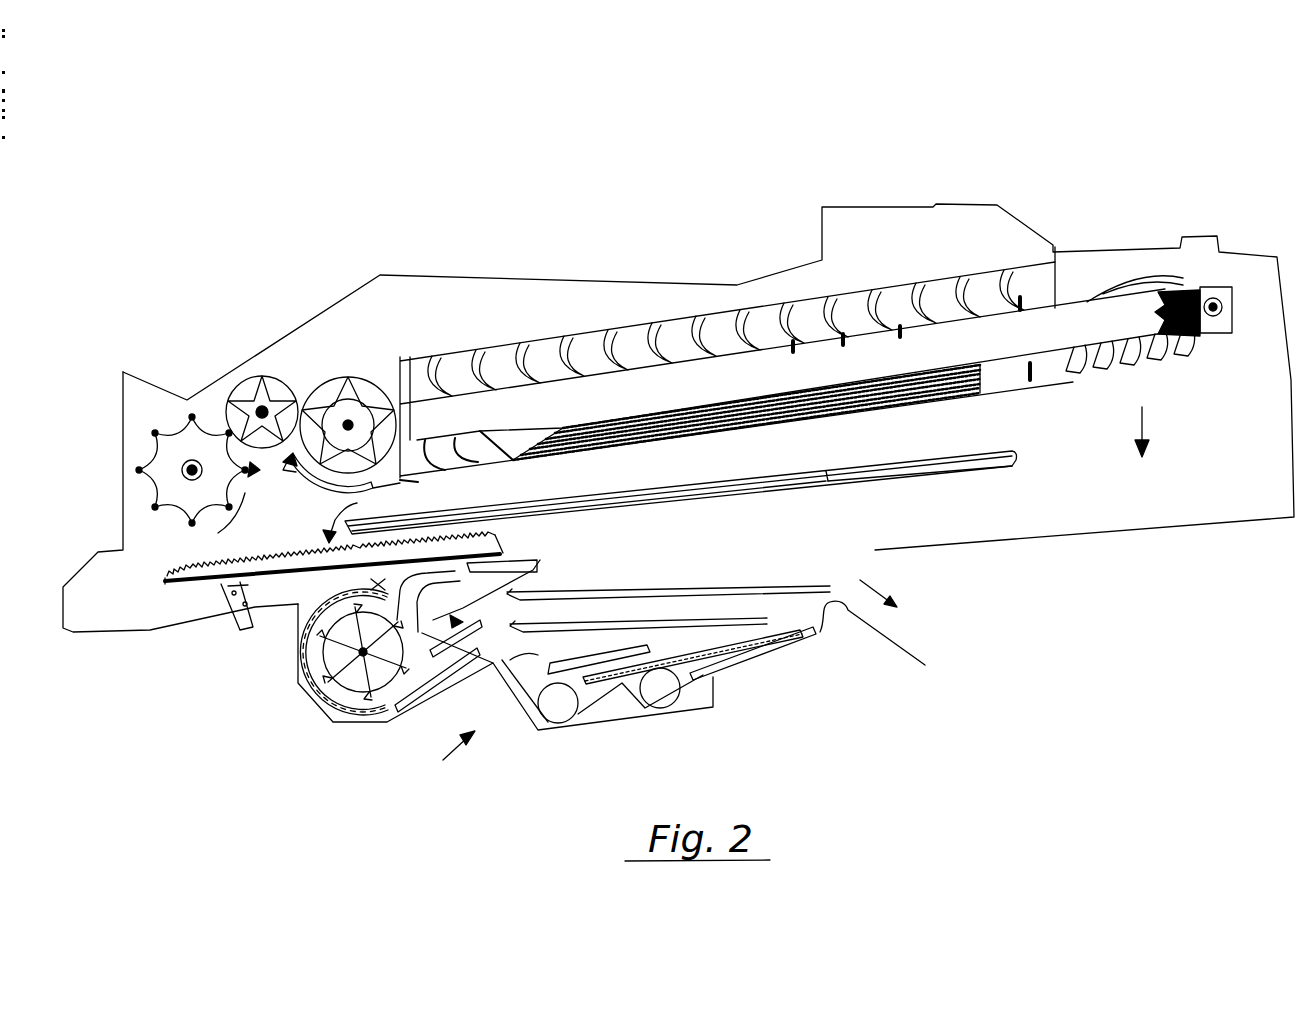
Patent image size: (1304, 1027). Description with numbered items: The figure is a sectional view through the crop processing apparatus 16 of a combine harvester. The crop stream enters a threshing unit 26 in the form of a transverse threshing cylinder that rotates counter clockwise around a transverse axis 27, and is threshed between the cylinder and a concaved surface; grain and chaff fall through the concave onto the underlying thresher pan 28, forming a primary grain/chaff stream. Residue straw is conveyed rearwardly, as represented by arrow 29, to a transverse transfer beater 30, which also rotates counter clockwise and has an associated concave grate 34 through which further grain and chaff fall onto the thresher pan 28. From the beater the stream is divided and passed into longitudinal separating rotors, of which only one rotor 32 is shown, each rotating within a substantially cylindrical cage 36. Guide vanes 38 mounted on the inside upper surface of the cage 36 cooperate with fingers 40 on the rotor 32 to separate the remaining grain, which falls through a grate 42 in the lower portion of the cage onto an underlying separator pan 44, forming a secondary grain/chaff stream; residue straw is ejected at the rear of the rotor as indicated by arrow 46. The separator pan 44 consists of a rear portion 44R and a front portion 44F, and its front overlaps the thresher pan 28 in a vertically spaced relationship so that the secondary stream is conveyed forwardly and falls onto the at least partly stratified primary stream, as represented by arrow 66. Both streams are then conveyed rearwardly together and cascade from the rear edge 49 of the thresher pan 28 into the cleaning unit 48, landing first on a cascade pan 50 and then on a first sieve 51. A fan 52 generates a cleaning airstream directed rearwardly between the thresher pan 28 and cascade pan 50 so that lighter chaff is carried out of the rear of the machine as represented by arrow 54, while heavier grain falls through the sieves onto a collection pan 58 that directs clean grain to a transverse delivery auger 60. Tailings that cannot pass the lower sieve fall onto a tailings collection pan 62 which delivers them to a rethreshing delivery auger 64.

The central processing apparatus 16 is at (287, 178).
The threshing unit 26 is at (142, 460).
The transverse axis 27 is at (190, 460).
The thresher pan 28 is at (278, 567).
The arrow 29 is at (245, 497).
The transverse transfer beater 30 is at (330, 393).
The separating rotor 32 is at (513, 407).
The concave grate 34 is at (330, 485).
The cylindrical cage 36 is at (647, 323).
The guide vanes 38 is at (720, 313).
The fingers 40 is at (900, 317).
The grate 42 is at (950, 397).
The separator pan 44 is at (820, 483).
The front portion of the separator pan 44F is at (725, 487).
The rear portion of the separator pan 44R is at (963, 470).
The arrow 46 is at (1151, 423).
The cleaning unit 48 is at (442, 757).
The rear edge of the thresher pan 49 is at (497, 535).
The cascade pan 50 is at (537, 567).
The first sieve 51 is at (773, 590).
The fan 52 is at (340, 687).
The arrow 54 is at (892, 582).
The collection pan 58 is at (698, 627).
The transverse delivery auger 60 is at (558, 713).
The tailings collection pan 62 is at (797, 640).
The rethreshing delivery auger 64 is at (668, 702).
The arrow 66 is at (320, 535).